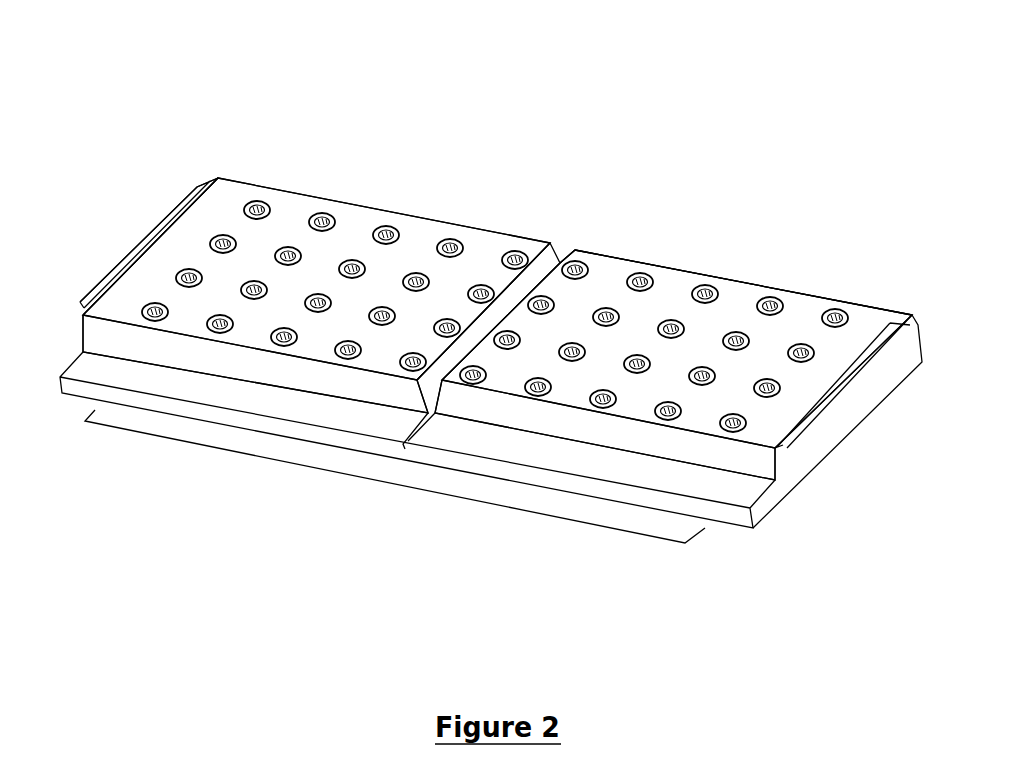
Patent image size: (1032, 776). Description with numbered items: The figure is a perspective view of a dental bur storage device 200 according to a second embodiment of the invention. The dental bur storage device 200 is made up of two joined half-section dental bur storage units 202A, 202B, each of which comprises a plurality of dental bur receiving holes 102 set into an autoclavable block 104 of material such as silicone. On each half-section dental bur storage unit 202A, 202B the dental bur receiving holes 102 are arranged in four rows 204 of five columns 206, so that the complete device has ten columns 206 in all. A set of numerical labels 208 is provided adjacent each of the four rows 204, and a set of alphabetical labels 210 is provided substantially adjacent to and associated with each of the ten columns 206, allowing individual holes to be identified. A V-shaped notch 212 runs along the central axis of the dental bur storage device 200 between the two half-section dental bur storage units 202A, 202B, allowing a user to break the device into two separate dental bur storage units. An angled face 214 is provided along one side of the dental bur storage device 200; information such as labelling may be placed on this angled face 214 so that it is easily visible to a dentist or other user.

The dental bur storage device 200 is at (627, 100).
The half-section dental bur storage unit 202A is at (406, 154).
The half-section dental bur storage unit 202B is at (840, 230).
The rows 204 is at (180, 188).
The columns 206 is at (730, 266).
The numerical labels 208 is at (132, 243).
The alphabetical labels 210 is at (393, 484).
The V-shaped notch 212 is at (569, 242).
The angled face 214 is at (127, 343).
The dental bur receiving holes 102 is at (418, 278).
The block 104 is at (298, 218).